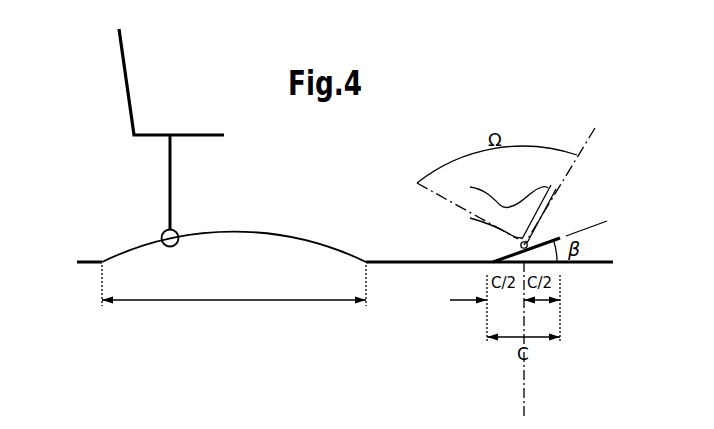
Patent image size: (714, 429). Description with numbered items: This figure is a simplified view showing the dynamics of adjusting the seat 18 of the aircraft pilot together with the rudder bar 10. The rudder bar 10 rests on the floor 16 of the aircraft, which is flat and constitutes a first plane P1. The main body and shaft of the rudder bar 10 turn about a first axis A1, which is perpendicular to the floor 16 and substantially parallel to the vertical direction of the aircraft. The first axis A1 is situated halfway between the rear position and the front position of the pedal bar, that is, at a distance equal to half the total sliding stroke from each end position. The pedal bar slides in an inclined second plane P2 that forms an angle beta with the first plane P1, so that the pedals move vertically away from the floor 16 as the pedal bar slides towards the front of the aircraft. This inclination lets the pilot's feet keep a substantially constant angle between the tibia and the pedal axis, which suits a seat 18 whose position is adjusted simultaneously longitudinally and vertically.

The rudder bar 10 is at (638, 252).
The floor 16 is at (383, 262).
The seat 18 is at (117, 93).
The first plane P1 is at (595, 264).
The second plane P2 is at (593, 227).
The first axis A1 is at (525, 382).